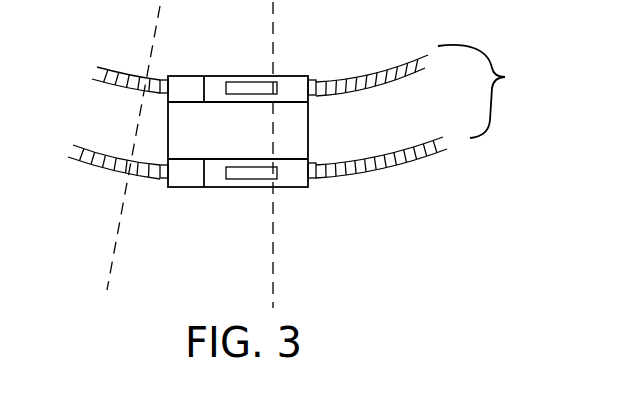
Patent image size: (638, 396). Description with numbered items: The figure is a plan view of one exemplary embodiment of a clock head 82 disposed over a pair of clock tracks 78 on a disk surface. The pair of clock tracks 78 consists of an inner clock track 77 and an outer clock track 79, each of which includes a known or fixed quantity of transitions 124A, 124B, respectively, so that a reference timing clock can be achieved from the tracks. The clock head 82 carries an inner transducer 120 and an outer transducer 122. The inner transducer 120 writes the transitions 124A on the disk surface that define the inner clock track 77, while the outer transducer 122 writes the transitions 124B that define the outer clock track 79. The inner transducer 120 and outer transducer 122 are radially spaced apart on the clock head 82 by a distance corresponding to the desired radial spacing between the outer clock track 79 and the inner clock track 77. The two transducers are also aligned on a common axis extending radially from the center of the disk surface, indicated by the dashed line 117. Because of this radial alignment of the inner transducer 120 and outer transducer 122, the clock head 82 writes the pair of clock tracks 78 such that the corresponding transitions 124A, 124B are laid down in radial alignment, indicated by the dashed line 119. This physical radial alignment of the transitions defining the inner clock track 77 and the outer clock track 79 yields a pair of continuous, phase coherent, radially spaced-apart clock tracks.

The inner clock track 77 is at (385, 72).
The pair of clock tracks 78 is at (486, 91).
The outer clock track 79 is at (395, 152).
The clock head 82 is at (183, 137).
The dashed line 117 is at (272, 282).
The dashed line 119 is at (117, 240).
The inner transducer 120 is at (280, 89).
The outer transducer 122 is at (278, 171).
The transitions 124A is at (118, 52).
The transitions 124B is at (134, 171).